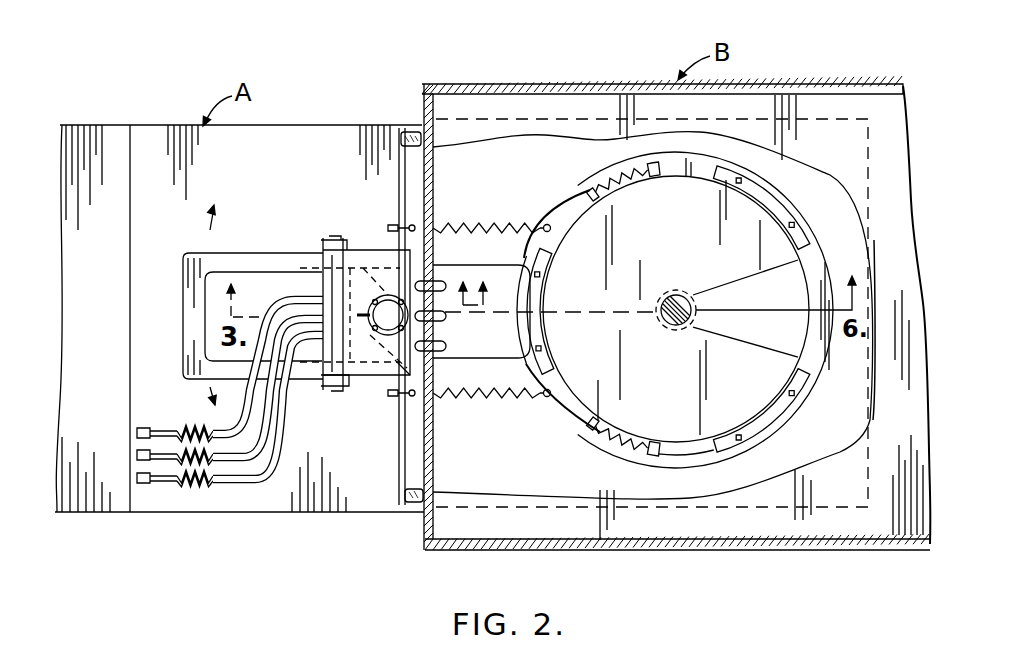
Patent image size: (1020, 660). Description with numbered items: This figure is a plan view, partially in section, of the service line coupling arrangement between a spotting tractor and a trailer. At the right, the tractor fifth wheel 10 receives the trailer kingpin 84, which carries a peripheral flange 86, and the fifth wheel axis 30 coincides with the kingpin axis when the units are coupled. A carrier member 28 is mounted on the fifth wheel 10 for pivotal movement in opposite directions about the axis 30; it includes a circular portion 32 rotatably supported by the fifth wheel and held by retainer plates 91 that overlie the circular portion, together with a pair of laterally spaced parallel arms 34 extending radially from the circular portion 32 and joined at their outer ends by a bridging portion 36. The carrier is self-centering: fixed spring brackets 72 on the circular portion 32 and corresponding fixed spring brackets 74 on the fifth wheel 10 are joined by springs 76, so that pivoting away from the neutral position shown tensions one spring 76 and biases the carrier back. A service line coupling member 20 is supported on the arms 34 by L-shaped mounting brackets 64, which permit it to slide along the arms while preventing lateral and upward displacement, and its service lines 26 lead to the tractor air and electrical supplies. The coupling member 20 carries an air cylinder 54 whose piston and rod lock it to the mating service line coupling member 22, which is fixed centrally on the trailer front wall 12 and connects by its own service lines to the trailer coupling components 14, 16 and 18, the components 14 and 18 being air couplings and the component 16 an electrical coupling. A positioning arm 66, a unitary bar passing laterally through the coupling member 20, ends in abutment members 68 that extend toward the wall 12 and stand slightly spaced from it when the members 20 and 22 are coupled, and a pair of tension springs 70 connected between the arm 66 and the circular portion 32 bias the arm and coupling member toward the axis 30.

The fifth wheel 10 is at (692, 420).
The front wall 12 is at (426, 531).
The coupling component 14 is at (454, 262).
The coupling component 16 is at (443, 320).
The coupling component 18 is at (443, 350).
The service line coupling member 20 is at (374, 250).
The mating service line coupling member 22 is at (410, 376).
The service lines 26 is at (241, 489).
The carrier member 28 is at (543, 212).
The fifth wheel axis 30 is at (672, 293).
The circular portion 32 is at (703, 457).
The arms 34 is at (260, 262).
The bridging portion 36 is at (192, 320).
The air cylinder 54 is at (377, 293).
The L-shaped mounting brackets 64 is at (320, 243).
The positioning arm 66 is at (399, 168).
The abutment members 68 is at (410, 133).
The tension springs 70 is at (518, 222).
The spring brackets 72 is at (660, 170).
The spring brackets 74 is at (592, 192).
The springs 76 is at (625, 173).
The kingpin 84 is at (700, 320).
The peripheral flange 86 is at (700, 298).
The retainer plates 91 is at (781, 206).